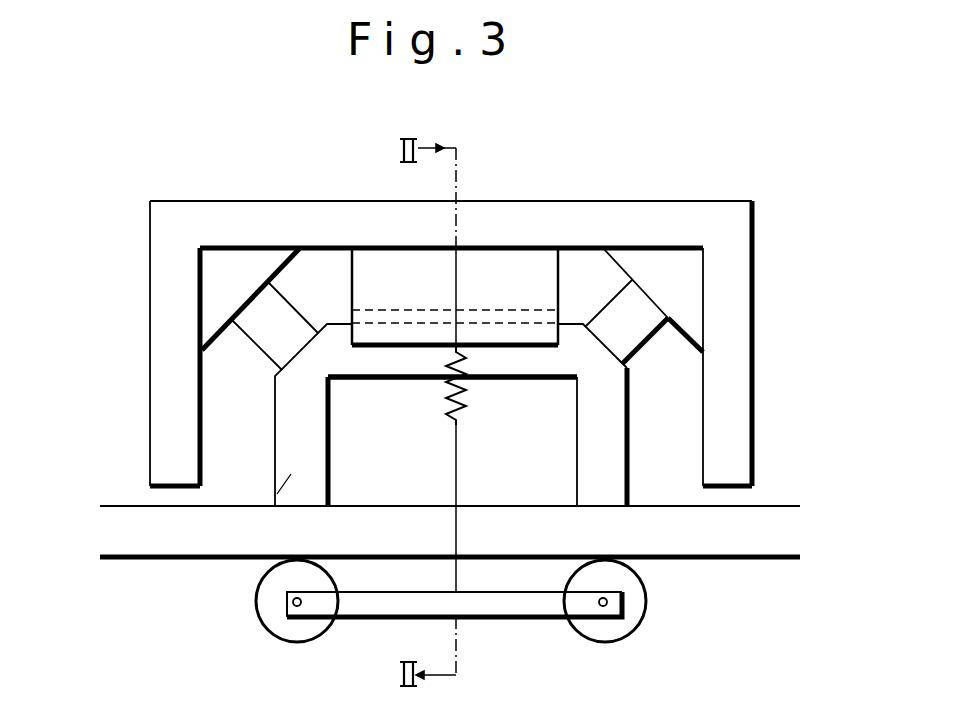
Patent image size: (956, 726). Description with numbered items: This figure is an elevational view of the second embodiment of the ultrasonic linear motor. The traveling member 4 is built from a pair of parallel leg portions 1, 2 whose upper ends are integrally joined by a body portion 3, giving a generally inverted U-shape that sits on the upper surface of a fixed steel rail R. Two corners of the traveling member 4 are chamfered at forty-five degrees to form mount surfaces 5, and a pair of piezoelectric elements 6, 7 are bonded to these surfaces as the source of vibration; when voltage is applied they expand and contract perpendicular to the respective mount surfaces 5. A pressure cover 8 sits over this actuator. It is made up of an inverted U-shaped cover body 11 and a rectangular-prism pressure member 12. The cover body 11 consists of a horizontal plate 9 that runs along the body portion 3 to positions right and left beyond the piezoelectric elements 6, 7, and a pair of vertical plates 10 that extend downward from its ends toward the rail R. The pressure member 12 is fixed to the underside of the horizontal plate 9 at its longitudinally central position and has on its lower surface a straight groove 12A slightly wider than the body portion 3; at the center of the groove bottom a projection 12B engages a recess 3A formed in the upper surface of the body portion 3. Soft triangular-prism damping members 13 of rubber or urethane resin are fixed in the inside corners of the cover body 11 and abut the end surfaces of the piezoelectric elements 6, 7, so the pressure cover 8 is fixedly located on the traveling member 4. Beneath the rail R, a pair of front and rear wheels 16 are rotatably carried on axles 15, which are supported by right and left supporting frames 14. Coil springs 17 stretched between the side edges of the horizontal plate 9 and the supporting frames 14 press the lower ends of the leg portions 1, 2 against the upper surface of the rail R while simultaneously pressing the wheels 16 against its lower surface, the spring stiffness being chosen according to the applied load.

The leg portion 1 is at (318, 481).
The leg portion 2 is at (605, 478).
The body portion 3 is at (556, 368).
The recess 3A is at (458, 327).
The traveling member 4 is at (401, 377).
The mount surfaces 5 is at (282, 360).
The piezoelectric element 6 is at (286, 313).
The piezoelectric element 7 is at (613, 318).
The pressure cover 8 is at (462, 310).
The horizontal plate 9 is at (547, 230).
The vertical plates 10 is at (160, 392).
The cover body 11 is at (757, 294).
The pressure member 12 is at (468, 258).
The straight groove 12A is at (460, 317).
The projection 12B is at (448, 320).
The damping members 13 is at (215, 306).
The supporting frames 14 is at (519, 600).
The axles 15 is at (293, 605).
The wheels 16 is at (304, 630).
The coil springs 17 is at (457, 478).
The rail R is at (771, 515).